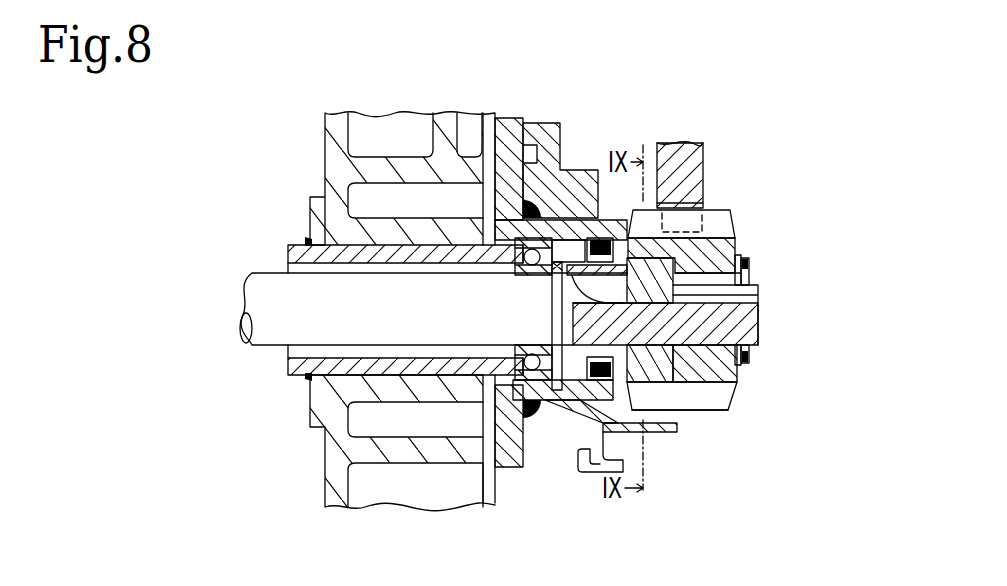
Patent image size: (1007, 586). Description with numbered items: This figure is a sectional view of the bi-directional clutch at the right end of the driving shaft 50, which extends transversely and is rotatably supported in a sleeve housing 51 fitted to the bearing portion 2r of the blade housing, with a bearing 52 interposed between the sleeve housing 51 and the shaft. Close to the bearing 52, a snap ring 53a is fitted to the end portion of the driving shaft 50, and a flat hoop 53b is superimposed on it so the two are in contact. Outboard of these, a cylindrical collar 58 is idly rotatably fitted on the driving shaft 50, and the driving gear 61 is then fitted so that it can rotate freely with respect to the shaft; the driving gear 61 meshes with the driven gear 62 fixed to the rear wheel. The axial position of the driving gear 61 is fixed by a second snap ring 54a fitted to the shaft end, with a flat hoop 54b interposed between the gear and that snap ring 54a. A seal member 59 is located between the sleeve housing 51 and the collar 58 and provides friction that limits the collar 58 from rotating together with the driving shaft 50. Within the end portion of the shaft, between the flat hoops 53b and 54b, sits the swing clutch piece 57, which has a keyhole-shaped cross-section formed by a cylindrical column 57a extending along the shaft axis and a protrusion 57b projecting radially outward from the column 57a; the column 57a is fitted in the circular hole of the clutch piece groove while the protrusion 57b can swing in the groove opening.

The bearing portion 2r is at (327, 140).
The driving shaft 50 is at (260, 347).
The sleeve housing 51 is at (287, 255).
The bearing 52 is at (536, 251).
The snap ring 53a is at (553, 395).
The flat hoop 53b is at (559, 388).
The snap ring 54a is at (748, 356).
The flat hoop 54b is at (738, 360).
The swing clutch piece 57 is at (751, 295).
The cylindrical column 57a is at (674, 276).
The protrusion 57b is at (678, 293).
The cylindrical collar 58 is at (641, 348).
The seal member 59 is at (607, 237).
The driving gear 61 is at (707, 411).
The driven gear 62 is at (705, 156).